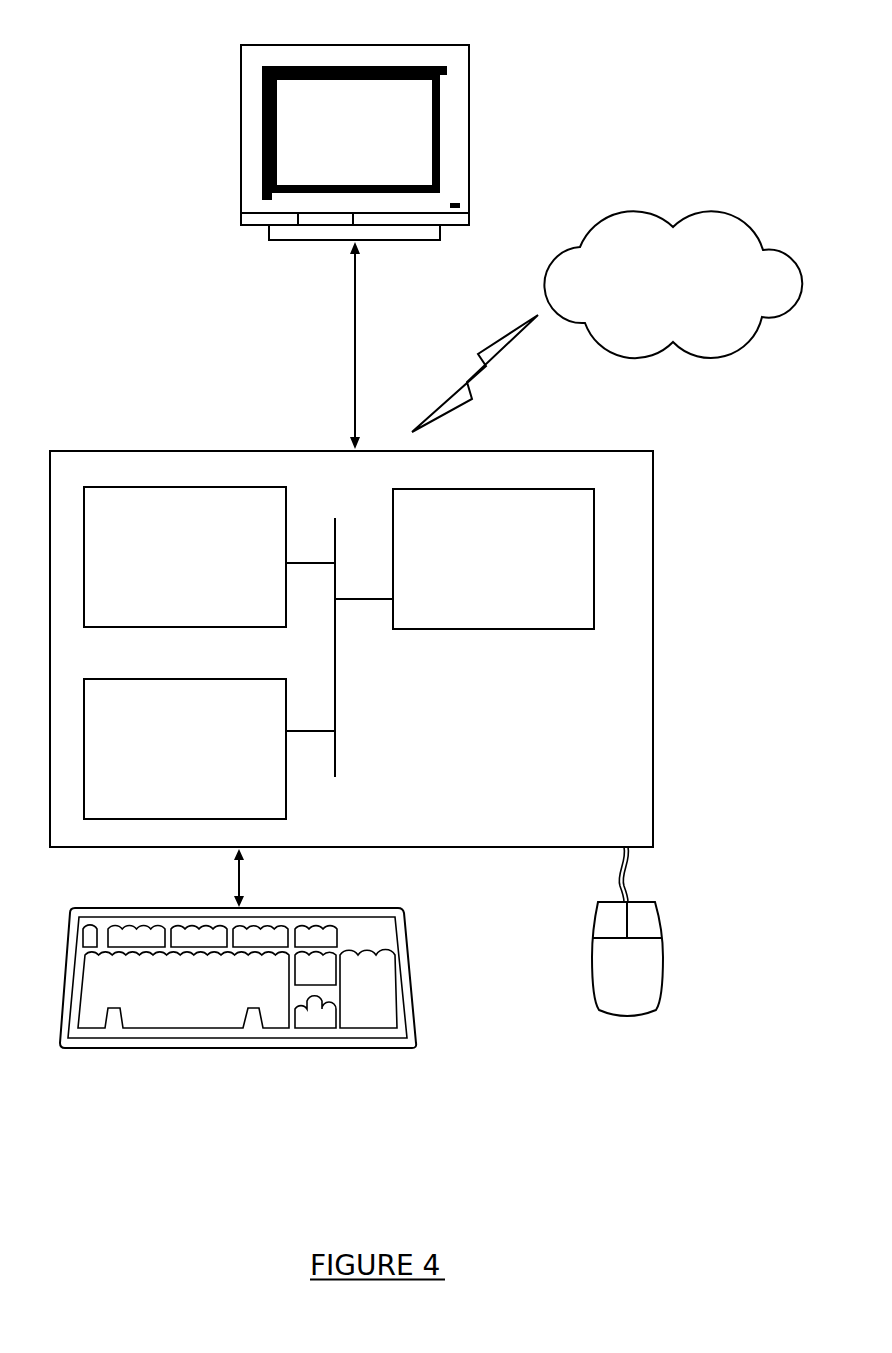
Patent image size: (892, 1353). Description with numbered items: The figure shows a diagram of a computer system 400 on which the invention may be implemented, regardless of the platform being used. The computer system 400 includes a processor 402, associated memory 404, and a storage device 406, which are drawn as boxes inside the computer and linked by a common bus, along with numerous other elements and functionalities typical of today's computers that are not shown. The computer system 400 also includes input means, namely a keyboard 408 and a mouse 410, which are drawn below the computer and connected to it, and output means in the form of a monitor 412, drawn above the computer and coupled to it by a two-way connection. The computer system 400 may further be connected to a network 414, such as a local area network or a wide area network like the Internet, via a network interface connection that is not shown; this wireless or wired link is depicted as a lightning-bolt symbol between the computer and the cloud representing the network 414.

The computer system 400 is at (399, 649).
The processor 402 is at (492, 568).
The memory 404 is at (168, 568).
The storage device 406 is at (165, 760).
The keyboard 408 is at (160, 1010).
The mouse 410 is at (610, 976).
The monitor 412 is at (330, 146).
The network 414 is at (666, 292).